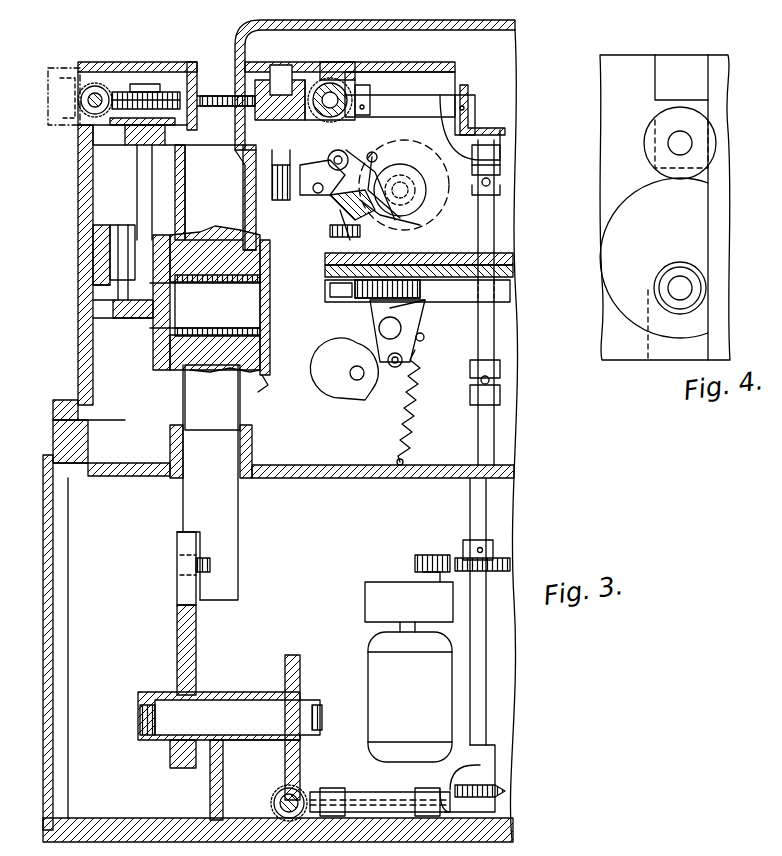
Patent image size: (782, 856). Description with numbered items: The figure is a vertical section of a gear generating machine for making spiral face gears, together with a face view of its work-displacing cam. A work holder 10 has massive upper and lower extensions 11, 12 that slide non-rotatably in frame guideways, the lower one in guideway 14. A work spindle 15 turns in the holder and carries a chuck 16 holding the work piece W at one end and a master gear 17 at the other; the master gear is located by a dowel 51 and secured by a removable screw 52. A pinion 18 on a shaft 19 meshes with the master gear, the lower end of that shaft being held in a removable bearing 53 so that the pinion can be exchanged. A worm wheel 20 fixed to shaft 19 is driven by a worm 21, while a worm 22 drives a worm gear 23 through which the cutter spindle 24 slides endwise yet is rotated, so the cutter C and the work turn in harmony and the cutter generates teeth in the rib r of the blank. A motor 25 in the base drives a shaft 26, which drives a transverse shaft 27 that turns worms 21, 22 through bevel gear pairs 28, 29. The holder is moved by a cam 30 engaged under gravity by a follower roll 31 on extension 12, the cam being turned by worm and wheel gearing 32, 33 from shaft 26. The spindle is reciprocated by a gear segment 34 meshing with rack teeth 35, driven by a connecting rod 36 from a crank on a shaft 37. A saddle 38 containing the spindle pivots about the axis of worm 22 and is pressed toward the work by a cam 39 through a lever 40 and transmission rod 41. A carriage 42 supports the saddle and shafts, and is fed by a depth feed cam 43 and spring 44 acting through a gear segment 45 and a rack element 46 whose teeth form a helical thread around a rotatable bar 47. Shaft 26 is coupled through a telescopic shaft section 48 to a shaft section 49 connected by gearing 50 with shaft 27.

In FIG. 3, the work holder 10 is at (190, 372).
In FIG. 3, the upper extension 11 is at (190, 198).
In FIG. 3, the lower extension 12 is at (218, 475).
In FIG. 4, the lower extension 12 is at (690, 62).
In FIG. 3, the guideway 14 is at (252, 430).
In FIG. 3, the work spindle 15 is at (190, 150).
In FIG. 3, the chuck 16 is at (270, 372).
In FIG. 3, the master gear 17 is at (153, 352).
In FIG. 3, the pinion 18 is at (130, 285).
In FIG. 3, the shaft 19 is at (137, 172).
In FIG. 3, the worm wheel 20 is at (130, 92).
In FIG. 3, the worm 21 is at (100, 85).
In FIG. 3, the worm 22 is at (335, 82).
In FIG. 3, the worm gear 23 is at (262, 80).
In FIG. 3, the cutter spindle 24 is at (330, 230).
In FIG. 3, the motor 25 is at (396, 700).
In FIG. 3, the shaft 26 is at (476, 522).
In FIG. 3, the transverse shaft 27 is at (425, 95).
In FIG. 3, the bevel gear pair 28 is at (72, 68).
In FIG. 3, the bevel gear pair 29 is at (358, 90).
In FIG. 3, the cam 30 is at (177, 650).
In FIG. 4, the cam 30 is at (695, 228).
In FIG. 3, the follower roll 31 is at (180, 588).
In FIG. 4, the follower roll 31 is at (712, 142).
In FIG. 3, the worm 32 is at (300, 790).
In FIG. 3, the worm wheel 33 is at (300, 680).
In FIG. 3, the gear segment 34 is at (310, 180).
In FIG. 3, the rack teeth 35 is at (280, 160).
In FIG. 3, the connecting rod 36 is at (376, 152).
In FIG. 3, the crank shaft 37 is at (405, 165).
In FIG. 3, the saddle 38 is at (335, 158).
In FIG. 3, the cam 39 is at (432, 212).
In FIG. 3, the lever 40 is at (405, 225).
In FIG. 3, the transmission rod 41 is at (333, 248).
In FIG. 3, the carriage 42 is at (480, 80).
In FIG. 3, the depth feed cam 43 is at (347, 398).
In FIG. 3, the spring 44 is at (415, 412).
In FIG. 3, the gear segment 45 is at (408, 312).
In FIG. 3, the rack element 46 is at (372, 303).
In FIG. 3, the rotatable bar 47 is at (500, 292).
In FIG. 3, the telescopic shaft section 48 is at (486, 352).
In FIG. 3, the shaft section 49 is at (500, 180).
In FIG. 3, the gearing 50 is at (480, 126).
In FIG. 3, the dowel 51 is at (180, 315).
In FIG. 3, the removable screw 52 is at (193, 283).
In FIG. 3, the bearing 53 is at (128, 318).
In FIG. 3, the work piece W is at (272, 348).
In FIG. 3, the rib r is at (272, 310).
In FIG. 3, the cutter C is at (290, 305).